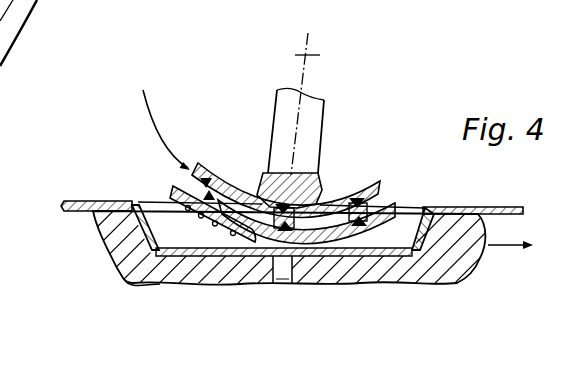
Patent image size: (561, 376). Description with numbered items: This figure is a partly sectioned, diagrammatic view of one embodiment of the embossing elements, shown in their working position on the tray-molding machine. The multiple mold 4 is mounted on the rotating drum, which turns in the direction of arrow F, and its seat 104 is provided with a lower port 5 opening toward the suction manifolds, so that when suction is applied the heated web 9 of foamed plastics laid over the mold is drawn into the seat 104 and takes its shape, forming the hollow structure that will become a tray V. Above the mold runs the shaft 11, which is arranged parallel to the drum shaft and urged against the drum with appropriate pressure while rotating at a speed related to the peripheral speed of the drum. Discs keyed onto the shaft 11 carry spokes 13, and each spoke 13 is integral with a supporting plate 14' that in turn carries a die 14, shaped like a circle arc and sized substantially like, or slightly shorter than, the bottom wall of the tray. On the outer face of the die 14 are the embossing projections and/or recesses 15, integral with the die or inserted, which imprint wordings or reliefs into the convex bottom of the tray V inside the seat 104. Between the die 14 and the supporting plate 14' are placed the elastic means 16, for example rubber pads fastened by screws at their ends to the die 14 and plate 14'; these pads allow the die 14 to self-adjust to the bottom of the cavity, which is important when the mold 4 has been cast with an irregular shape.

The multiple mold 4 is at (117, 245).
The seat 104 is at (143, 284).
The lower port 5 is at (283, 284).
The web 9 is at (85, 201).
The die 14 is at (327, 214).
The supporting plate 14' is at (306, 196).
The embossing projections and/or recesses 15 is at (380, 215).
The elastic means 16 is at (212, 162).
The spoke 13 is at (322, 117).
The shaft 11 is at (312, 45).
The tray V is at (160, 215).
The arrow F is at (510, 258).